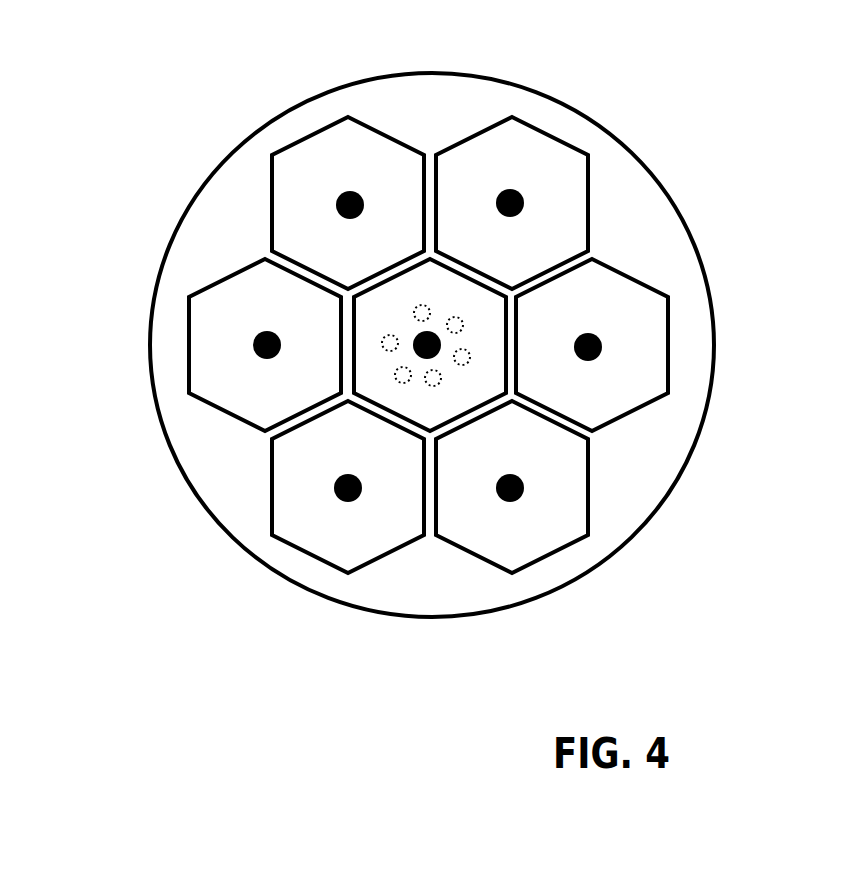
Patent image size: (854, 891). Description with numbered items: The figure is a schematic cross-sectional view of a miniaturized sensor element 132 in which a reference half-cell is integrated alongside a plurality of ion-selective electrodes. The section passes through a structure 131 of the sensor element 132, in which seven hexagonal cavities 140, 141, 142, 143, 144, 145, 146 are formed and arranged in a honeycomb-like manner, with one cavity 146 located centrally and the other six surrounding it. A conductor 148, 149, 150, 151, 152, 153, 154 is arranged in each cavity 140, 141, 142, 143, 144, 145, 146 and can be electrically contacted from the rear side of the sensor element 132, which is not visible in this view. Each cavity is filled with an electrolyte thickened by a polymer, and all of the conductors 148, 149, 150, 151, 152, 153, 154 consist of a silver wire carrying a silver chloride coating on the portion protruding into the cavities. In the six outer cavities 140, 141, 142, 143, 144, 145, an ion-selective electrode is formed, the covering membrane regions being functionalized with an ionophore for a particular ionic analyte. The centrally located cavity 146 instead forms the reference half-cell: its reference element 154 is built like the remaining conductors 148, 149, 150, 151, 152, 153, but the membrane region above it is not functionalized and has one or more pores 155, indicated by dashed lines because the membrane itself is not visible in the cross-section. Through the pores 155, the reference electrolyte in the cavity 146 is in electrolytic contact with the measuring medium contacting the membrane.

The structure 131 is at (672, 443).
The sensor element 132 is at (646, 68).
The hexagonal cavity 140 is at (515, 547).
The hexagonal cavity 141 is at (317, 535).
The hexagonal cavity 142 is at (208, 342).
The hexagonal cavity 143 is at (320, 167).
The hexagonal cavity 144 is at (537, 150).
The hexagonal cavity 145 is at (650, 378).
The centrally located cavity 146 is at (442, 340).
The conductor 148 is at (518, 500).
The conductor 149 is at (350, 500).
The conductor 150 is at (258, 362).
The conductor 151 is at (338, 198).
The conductor 152 is at (512, 135).
The conductor 153 is at (602, 345).
The reference element 154 is at (490, 310).
The pores 155 is at (388, 335).